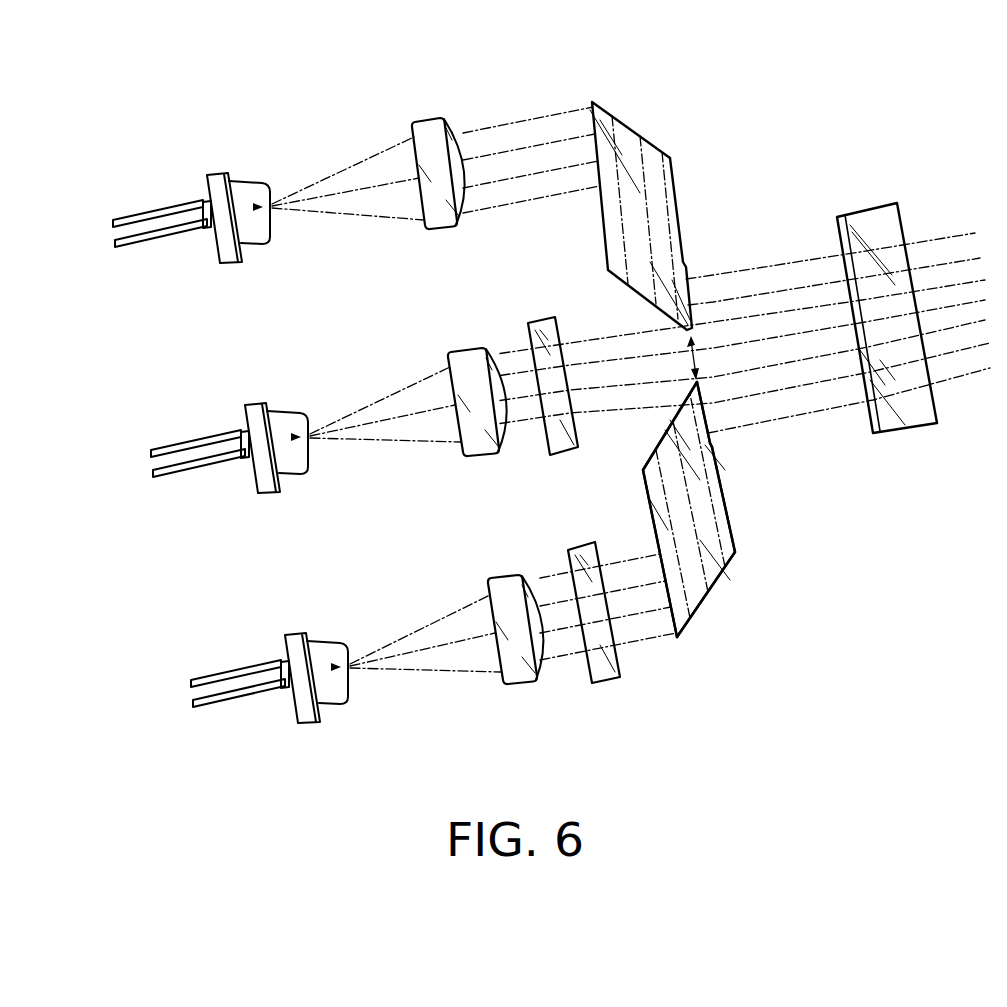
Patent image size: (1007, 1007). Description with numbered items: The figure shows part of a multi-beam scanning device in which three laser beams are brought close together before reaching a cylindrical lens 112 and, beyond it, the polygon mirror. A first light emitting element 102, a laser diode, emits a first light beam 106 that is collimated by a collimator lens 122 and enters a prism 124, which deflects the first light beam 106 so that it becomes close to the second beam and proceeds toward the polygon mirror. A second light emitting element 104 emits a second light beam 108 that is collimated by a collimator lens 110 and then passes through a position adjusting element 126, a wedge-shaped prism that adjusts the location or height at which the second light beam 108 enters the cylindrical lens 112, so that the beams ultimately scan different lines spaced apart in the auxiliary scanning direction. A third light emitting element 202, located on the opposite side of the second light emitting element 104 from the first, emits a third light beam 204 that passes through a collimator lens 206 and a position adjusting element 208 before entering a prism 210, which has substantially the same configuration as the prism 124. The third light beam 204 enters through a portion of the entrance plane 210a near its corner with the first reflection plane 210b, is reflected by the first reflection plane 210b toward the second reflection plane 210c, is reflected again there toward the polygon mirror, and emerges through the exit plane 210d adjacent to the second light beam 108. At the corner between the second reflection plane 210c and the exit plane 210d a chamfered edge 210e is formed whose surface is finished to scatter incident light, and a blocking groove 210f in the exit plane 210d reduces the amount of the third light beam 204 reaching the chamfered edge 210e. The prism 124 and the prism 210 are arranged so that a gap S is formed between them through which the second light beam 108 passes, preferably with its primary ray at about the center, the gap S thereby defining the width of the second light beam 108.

The first light emitting element 102 is at (217, 173).
The second light emitting element 104 is at (258, 402).
The first light beam 106 is at (342, 170).
The second light beam 108 is at (378, 397).
The collimator lens 110 is at (480, 345).
The cylindrical lens 112 is at (870, 207).
The collimator lens 122 is at (427, 122).
The prism 124 is at (648, 120).
The position adjusting element 126 is at (547, 317).
The third light emitting element 202 is at (298, 628).
The third light beam 204 is at (418, 625).
The collimator lens 206 is at (507, 575).
The position adjusting element 208 is at (607, 680).
The prism 210 is at (703, 548).
The entrance plane 210a is at (652, 520).
The first reflection plane 210b is at (705, 600).
The second reflection plane 210c is at (658, 443).
The exit plane 210d is at (734, 512).
The chamfered edge 210e is at (710, 376).
The blocking groove 210f is at (712, 446).
The gap S is at (697, 360).